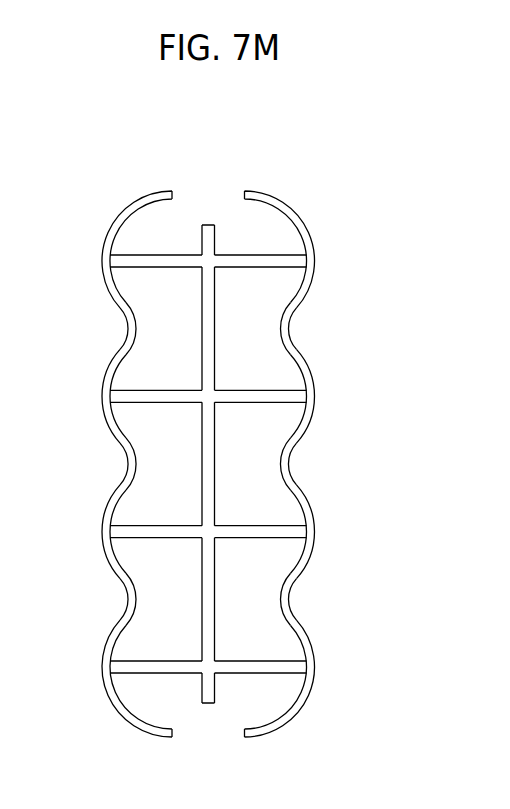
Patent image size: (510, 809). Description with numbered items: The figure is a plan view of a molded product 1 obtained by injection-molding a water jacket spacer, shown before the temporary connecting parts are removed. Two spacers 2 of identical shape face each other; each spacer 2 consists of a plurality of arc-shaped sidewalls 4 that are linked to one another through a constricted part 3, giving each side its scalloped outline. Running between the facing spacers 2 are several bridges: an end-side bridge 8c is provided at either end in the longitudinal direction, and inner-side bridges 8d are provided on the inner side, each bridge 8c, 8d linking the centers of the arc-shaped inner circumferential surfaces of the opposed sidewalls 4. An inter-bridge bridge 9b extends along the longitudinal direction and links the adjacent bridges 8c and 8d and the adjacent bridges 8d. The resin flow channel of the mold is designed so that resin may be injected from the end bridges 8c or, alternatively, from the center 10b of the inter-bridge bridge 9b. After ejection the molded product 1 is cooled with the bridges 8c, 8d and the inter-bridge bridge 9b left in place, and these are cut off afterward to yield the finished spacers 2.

The molded product 1 is at (206, 432).
The spacer 2 is at (103, 261).
The constricted part 3 is at (128, 329).
The arc-shaped sidewall 4 is at (107, 559).
The bridge (end-side bridge) 8c is at (237, 269).
The bridge (inner-side bridge) 8d is at (233, 392).
The inter-bridge bridge 9b is at (203, 432).
The center of the inter-bridge bridge 10b is at (203, 481).